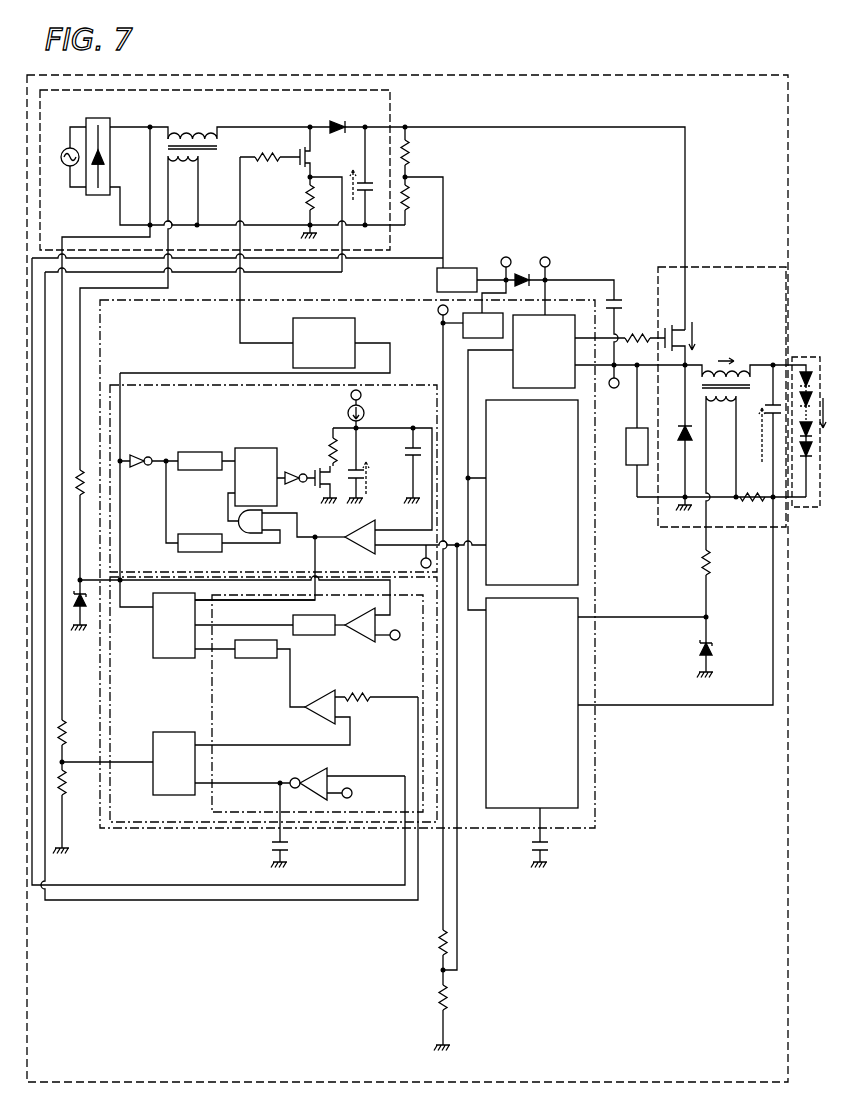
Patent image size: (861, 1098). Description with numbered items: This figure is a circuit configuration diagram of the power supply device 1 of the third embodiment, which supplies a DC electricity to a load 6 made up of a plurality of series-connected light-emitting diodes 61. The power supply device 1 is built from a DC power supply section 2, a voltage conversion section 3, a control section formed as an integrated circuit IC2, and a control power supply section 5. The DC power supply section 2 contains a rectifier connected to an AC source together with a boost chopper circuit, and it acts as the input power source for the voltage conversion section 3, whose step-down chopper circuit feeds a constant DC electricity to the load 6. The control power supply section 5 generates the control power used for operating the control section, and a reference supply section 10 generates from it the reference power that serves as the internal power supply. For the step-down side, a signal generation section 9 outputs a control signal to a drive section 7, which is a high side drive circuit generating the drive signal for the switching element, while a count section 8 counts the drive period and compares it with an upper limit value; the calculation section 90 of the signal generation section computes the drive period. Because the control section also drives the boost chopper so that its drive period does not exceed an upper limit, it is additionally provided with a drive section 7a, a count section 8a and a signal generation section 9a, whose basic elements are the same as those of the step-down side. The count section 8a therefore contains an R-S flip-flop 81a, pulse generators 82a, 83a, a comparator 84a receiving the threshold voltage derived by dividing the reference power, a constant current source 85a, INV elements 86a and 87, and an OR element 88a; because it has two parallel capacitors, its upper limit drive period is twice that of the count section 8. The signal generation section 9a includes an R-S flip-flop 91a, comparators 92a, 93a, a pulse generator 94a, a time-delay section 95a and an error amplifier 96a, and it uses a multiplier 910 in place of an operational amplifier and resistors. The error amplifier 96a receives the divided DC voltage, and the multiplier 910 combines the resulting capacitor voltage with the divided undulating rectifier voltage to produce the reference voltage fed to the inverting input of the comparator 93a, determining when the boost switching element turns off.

The power supply device 1 is at (789, 118).
The DC power supply section 2 is at (391, 104).
The voltage conversion section 3 is at (758, 267).
The control power supply section 5 is at (456, 268).
The load 6 is at (808, 357).
The drive section 7 is at (514, 378).
The drive section 7a is at (292, 322).
The count section 8 is at (492, 404).
The count section 8a is at (421, 384).
The signal generation section 9 is at (580, 790).
The signal generation section 9a is at (138, 823).
The reference supply section 10 is at (470, 340).
The light-emitting diode 61 is at (814, 378).
The R-S flip-flop 81a is at (255, 450).
The pulse generator 82a is at (205, 444).
The pulse generator 83a is at (195, 535).
The comparator 84a is at (345, 540).
The constant current source 85a is at (348, 413).
The INV element 86a is at (136, 455).
The INV element 87 is at (292, 485).
The OR element 88a is at (250, 535).
The calculation section 90 is at (212, 719).
The R-S flip-flop 91a is at (170, 660).
The comparator 92a is at (361, 640).
The comparator 93a is at (308, 712).
The pulse generator 94a is at (316, 636).
The time-delay section 95a is at (242, 660).
The error amplifier 96a is at (306, 779).
The multiplier 910 is at (154, 778).
The integrated circuit IC2 is at (596, 752).